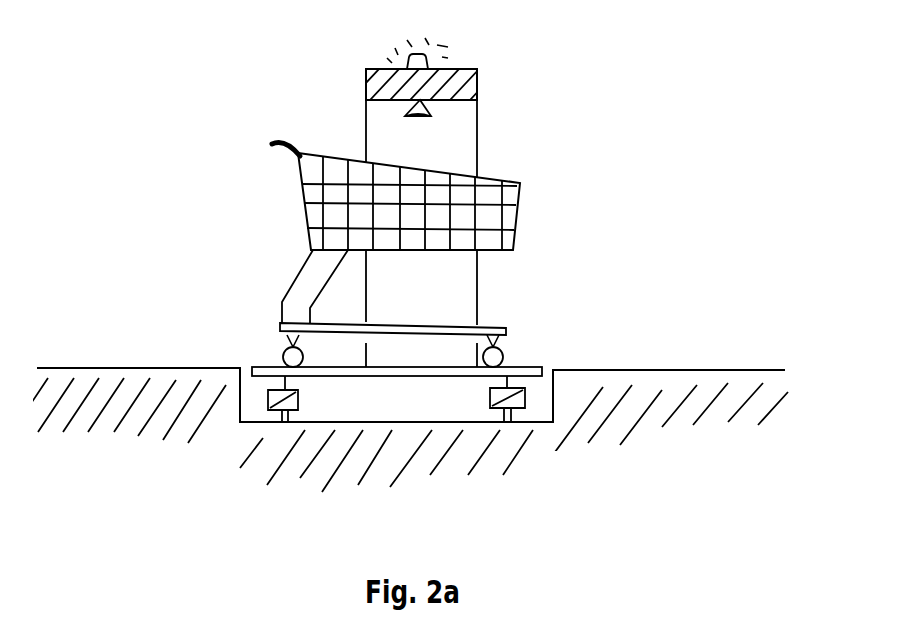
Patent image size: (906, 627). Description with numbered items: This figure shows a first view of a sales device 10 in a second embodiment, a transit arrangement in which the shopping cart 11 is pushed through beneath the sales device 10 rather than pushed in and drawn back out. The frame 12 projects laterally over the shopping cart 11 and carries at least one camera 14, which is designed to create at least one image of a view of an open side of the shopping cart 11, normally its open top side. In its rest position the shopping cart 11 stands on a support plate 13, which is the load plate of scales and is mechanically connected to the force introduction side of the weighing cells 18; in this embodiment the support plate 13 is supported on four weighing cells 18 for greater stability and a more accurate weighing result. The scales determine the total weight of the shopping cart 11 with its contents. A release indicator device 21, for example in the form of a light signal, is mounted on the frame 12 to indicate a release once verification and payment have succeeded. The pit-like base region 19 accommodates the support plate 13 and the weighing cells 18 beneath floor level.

The sales device 10 is at (530, 125).
The shopping cart 11 is at (295, 187).
The frame 12 is at (363, 77).
The support plate 13 is at (258, 365).
The camera 14 is at (435, 118).
The weighing cell 18 is at (270, 408).
The pit / weighing base 19 is at (407, 410).
The release indicator device 21 is at (455, 48).